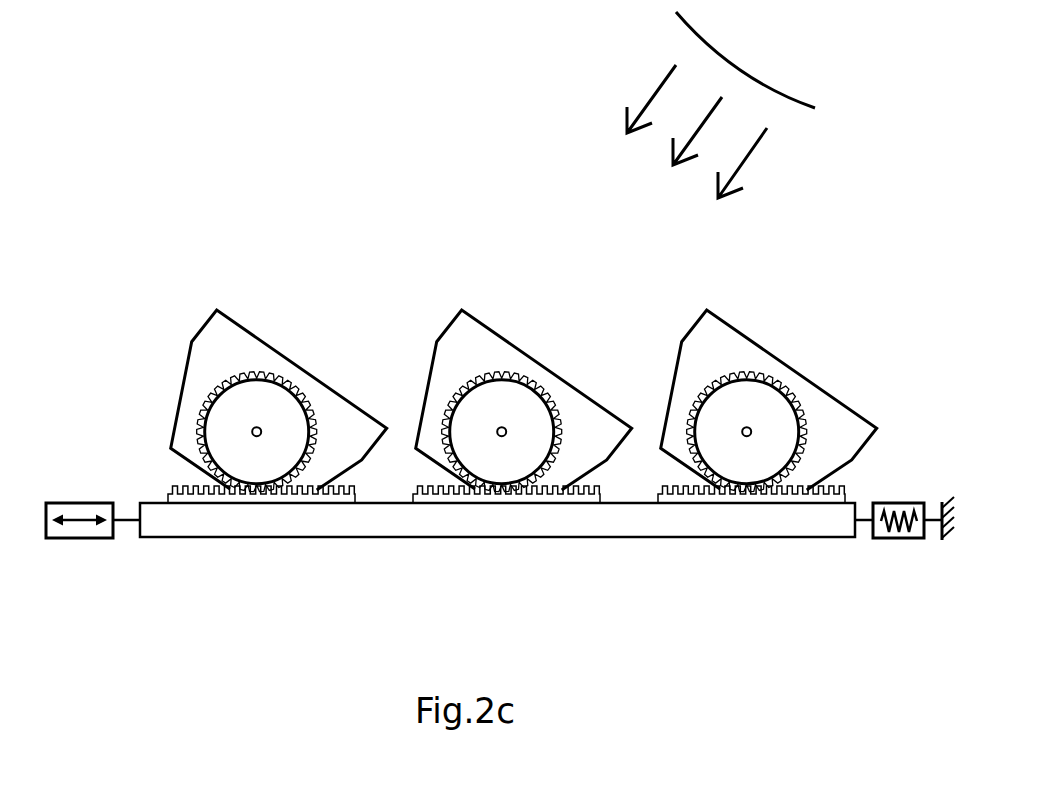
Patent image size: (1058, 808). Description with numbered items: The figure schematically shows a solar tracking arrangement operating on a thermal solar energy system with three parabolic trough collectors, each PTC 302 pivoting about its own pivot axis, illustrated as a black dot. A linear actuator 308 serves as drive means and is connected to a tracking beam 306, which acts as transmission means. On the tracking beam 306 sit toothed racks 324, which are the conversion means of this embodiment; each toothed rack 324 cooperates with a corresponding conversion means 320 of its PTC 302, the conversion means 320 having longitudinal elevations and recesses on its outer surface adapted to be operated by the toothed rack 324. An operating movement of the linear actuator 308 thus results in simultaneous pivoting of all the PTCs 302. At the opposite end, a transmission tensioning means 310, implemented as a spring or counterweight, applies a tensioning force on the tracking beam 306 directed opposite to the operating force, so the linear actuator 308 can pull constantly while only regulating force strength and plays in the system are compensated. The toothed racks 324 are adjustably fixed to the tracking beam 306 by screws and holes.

The PTC 302 is at (215, 325).
The tracking beam 306 is at (385, 527).
The linear actuator 308 is at (82, 533).
The transmission tensioning means 310 is at (898, 538).
The conversion means of the PTC 320 is at (272, 377).
The toothed rack 324 is at (222, 498).